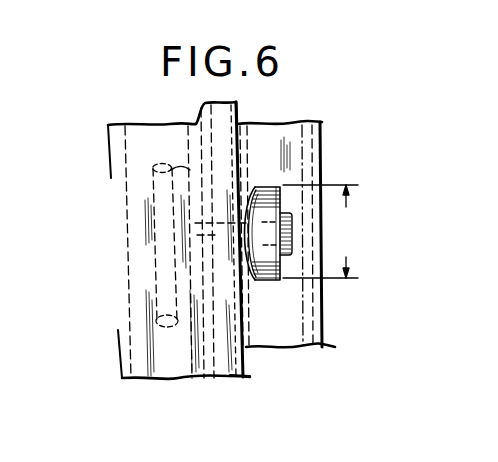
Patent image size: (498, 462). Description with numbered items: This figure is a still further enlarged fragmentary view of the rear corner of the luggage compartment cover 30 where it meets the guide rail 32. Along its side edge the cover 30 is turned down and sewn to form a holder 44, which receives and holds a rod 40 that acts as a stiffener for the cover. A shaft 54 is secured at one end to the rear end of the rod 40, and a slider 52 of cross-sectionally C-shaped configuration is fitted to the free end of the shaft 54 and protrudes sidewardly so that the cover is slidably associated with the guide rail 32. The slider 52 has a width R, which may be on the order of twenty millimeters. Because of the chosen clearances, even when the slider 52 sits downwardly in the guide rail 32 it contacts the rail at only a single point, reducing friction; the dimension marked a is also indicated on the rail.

The luggage compartment cover 30 is at (118, 352).
The guide rail 32 is at (283, 138).
The rod 40 is at (176, 273).
The holder 44 is at (176, 368).
The slider 52 is at (270, 281).
The shaft 54 is at (175, 233).
The width R is at (320, 231).
The distance a is at (246, 247).